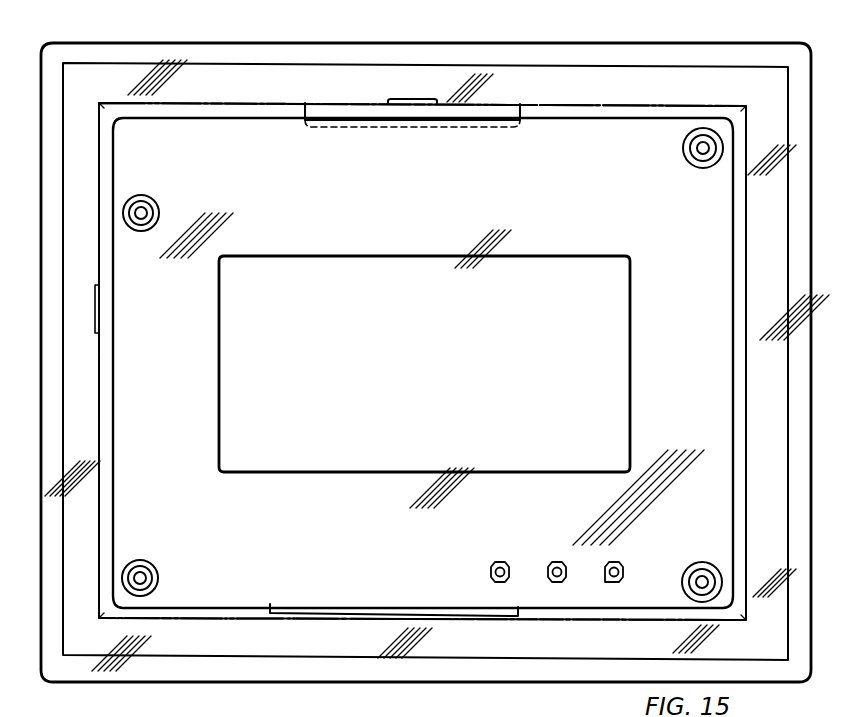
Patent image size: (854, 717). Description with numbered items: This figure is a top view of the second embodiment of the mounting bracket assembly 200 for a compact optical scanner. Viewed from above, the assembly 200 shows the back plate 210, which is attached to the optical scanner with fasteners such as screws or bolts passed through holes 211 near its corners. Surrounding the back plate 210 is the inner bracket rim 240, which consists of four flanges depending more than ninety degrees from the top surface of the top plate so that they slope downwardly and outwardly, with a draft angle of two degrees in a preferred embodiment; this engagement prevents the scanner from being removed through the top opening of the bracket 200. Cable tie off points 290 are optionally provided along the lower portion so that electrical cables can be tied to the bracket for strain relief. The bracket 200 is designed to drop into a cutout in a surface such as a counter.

The mounting bracket assembly 200 is at (74, 43).
The back plate 210 is at (482, 469).
The holes 211 is at (141, 232).
The inner bracket rim 240 is at (277, 106).
The cable tie off points 290 is at (612, 562).